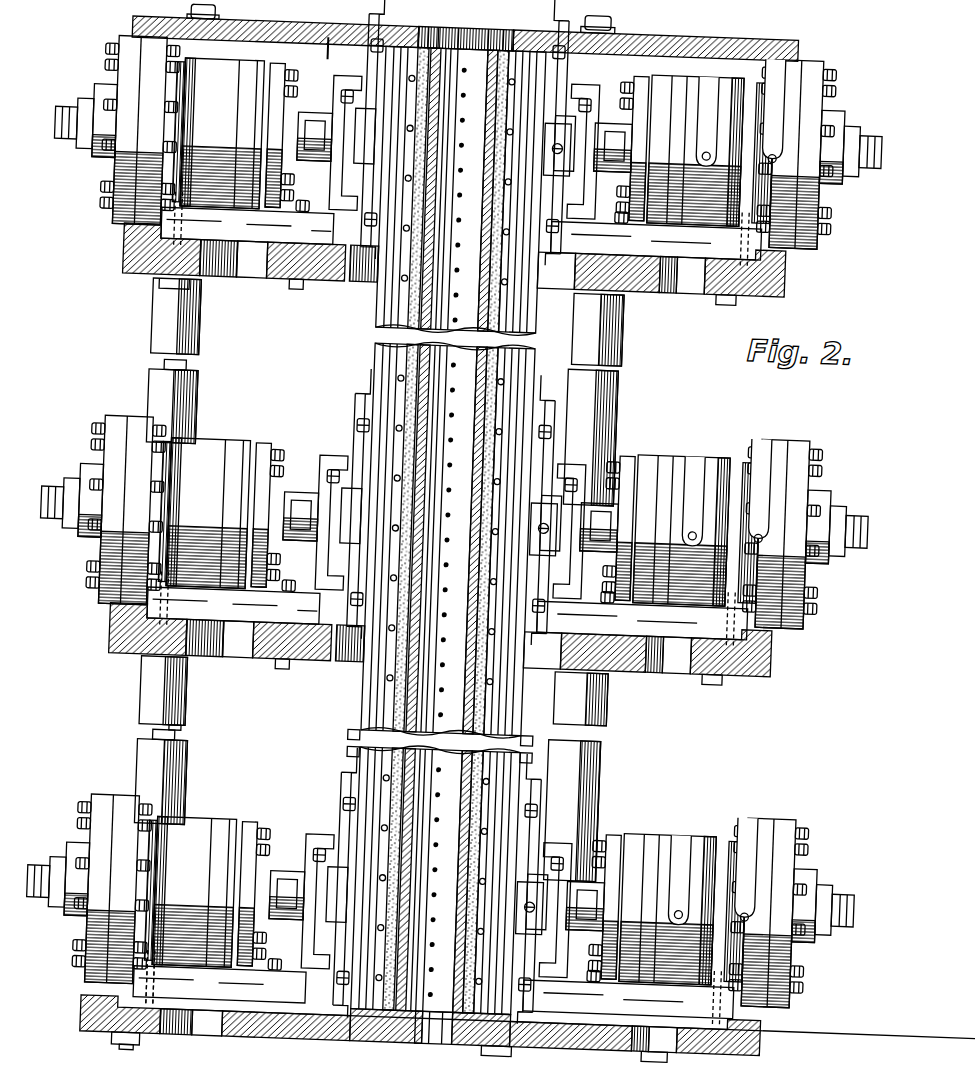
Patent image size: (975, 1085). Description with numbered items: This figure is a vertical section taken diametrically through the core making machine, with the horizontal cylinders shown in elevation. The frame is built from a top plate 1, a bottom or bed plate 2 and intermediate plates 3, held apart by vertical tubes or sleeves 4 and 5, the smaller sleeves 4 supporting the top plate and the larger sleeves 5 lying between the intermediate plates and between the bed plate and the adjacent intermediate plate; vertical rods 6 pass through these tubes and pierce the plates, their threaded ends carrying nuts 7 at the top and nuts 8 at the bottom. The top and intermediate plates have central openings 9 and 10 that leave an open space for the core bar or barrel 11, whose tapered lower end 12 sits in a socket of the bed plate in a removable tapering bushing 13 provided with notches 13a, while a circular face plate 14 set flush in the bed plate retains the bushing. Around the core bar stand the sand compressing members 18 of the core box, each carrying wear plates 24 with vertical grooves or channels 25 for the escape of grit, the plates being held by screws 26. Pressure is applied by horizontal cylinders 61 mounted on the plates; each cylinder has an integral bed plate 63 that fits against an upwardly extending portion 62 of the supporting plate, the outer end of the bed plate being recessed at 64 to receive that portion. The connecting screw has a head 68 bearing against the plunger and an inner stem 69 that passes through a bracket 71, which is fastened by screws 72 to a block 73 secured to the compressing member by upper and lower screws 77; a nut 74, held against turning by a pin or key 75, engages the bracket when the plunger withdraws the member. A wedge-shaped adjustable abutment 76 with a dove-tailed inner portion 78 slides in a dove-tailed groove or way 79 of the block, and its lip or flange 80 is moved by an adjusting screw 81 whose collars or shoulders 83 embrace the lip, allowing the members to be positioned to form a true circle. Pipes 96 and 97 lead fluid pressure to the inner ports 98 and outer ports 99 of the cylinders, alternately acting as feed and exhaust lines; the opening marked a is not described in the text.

The top horizontal plate 1 is at (721, 28).
The bottom or bed plate 2 is at (776, 1040).
The intermediate horizontal plate 3 is at (777, 284).
The vertical tube or sleeve 4 is at (176, 60).
The vertical tube or sleeve 5 is at (134, 384).
The vertical rod 6 is at (609, 361).
The nut 7 is at (194, 20).
The nut 8 is at (148, 1052).
The central opening 9 is at (455, 34).
The central opening 10 is at (542, 278).
The core bar or barrel 11 is at (463, 880).
The lower end of core bar 12 is at (452, 1042).
The tapering bushing 13 is at (406, 1042).
The notches 13a is at (378, 1042).
The circular face plate 14 is at (308, 70).
The sand compressing member 18 is at (360, 398).
The wear plate 24 is at (355, 735).
The vertical groove or channel 25 is at (386, 754).
The screw 26 is at (506, 672).
The horizontal cylinder 61 is at (459, 522).
The upwardly extending portion 62 is at (114, 252).
The bed plate of horizontal cylinder 63 is at (447, 615).
The recess 64 is at (445, 620).
The head of screw 68 is at (439, 563).
The inner portion or stem of screw 69 is at (304, 852).
The bracket 71 is at (438, 592).
The screw 72 is at (461, 507).
The block 73 is at (436, 598).
The nut 74 is at (580, 113).
The pin or key 75 is at (469, 544).
The adjustable abutment 76 is at (324, 130).
The screw 77 is at (358, 40).
The dove-tailed inner portion 78 is at (454, 481).
The dove-tailed groove or way 79 is at (359, 554).
The lip or flange 80 is at (530, 148).
The adjusting screw 81 is at (540, 150).
The collars or shoulders 83 is at (541, 550).
The pipe 96 is at (665, 540).
The pipe 97 is at (766, 490).
The inner port or opening 98 is at (690, 142).
The outer port or opening 99 is at (762, 149).
The opening a is at (457, 698).